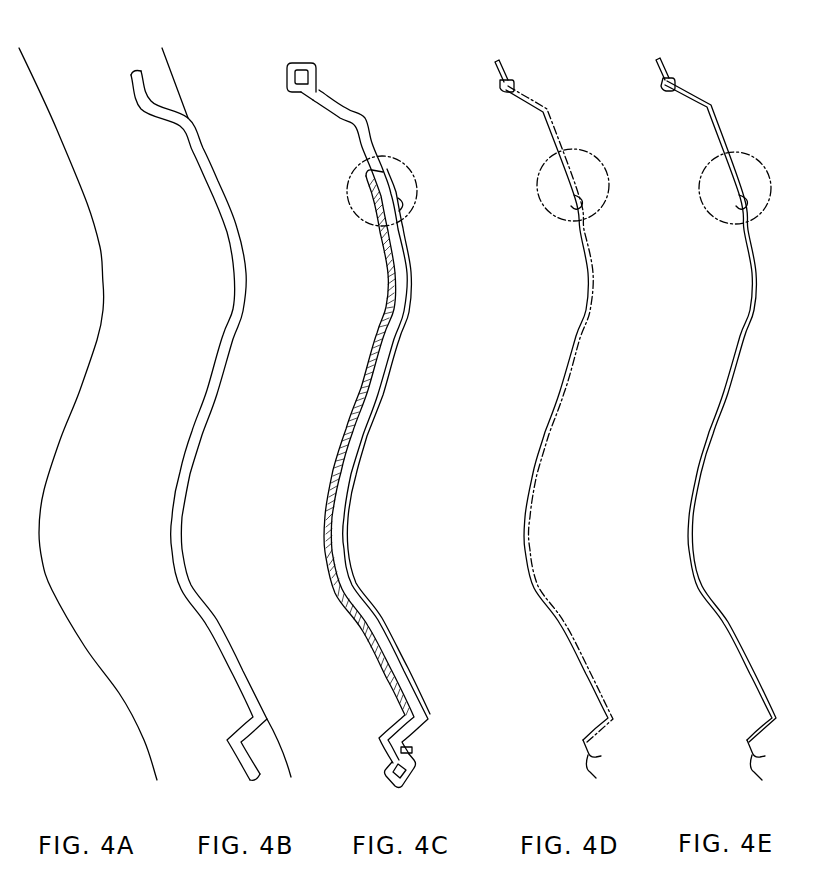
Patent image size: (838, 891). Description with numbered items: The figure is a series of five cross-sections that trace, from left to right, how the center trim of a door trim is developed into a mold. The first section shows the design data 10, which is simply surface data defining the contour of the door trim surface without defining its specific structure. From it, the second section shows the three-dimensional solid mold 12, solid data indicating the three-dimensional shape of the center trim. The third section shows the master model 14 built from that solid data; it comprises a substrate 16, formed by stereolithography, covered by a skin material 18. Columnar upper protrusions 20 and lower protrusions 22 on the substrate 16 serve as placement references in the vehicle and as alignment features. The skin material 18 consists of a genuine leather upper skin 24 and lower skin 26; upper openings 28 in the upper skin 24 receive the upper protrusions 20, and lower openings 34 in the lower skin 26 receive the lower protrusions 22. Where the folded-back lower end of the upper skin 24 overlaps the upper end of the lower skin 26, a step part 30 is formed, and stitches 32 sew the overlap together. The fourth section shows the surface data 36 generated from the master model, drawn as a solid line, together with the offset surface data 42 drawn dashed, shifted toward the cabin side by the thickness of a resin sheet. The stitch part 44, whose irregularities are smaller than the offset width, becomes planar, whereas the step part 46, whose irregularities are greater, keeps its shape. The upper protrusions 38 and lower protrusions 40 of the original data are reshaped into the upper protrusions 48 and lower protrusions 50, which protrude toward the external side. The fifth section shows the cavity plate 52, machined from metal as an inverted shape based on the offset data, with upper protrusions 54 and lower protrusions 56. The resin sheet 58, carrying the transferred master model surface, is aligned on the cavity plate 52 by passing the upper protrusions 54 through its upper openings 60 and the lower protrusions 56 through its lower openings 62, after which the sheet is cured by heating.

In FIG. 4A, the design data 10 is at (86, 202).
In FIG. 4B, the 3D solid mold 12 is at (221, 185).
In FIG. 4C, the master model 14 is at (372, 423).
In FIG. 4C, the substrate 16 is at (365, 373).
In FIG. 4C, the skin material 18 is at (402, 324).
In FIG. 4C, the upper protrusions 20 is at (286, 79).
In FIG. 4C, the lower protrusions 22 is at (385, 767).
In FIG. 4C, the upper skin 24 is at (378, 140).
In FIG. 4C, the lower skin 26 is at (344, 513).
In FIG. 4C, the upper openings 28 is at (324, 74).
In FIG. 4C, the step part 30 is at (404, 210).
In FIG. 4C, the stitches 32 is at (372, 175).
In FIG. 4C, the lower openings 34 is at (414, 750).
In FIG. 4D, the surface data 36 is at (546, 412).
In FIG. 4D, the upper protrusions 38 is at (510, 80).
In FIG. 4D, the lower protrusions 40 is at (601, 755).
In FIG. 4D, the offset surface data 42 is at (540, 457).
In FIG. 4D, the stitch part 44 is at (585, 175).
In FIG. 4D, the step part 46 is at (578, 207).
In FIG. 4E, the step part 46 is at (735, 188).
In FIG. 4D, the upper protrusions 48 is at (497, 83).
In FIG. 4D, the lower protrusions 50 is at (581, 765).
In FIG. 4E, the cavity plate 52 is at (728, 128).
In FIG. 4E, the upper protrusions 54 is at (652, 87).
In FIG. 4E, the lower protrusions 56 is at (745, 763).
In FIG. 4E, the resin sheet 58 is at (740, 317).
In FIG. 4E, the upper openings 60 is at (674, 78).
In FIG. 4E, the lower openings 62 is at (758, 736).